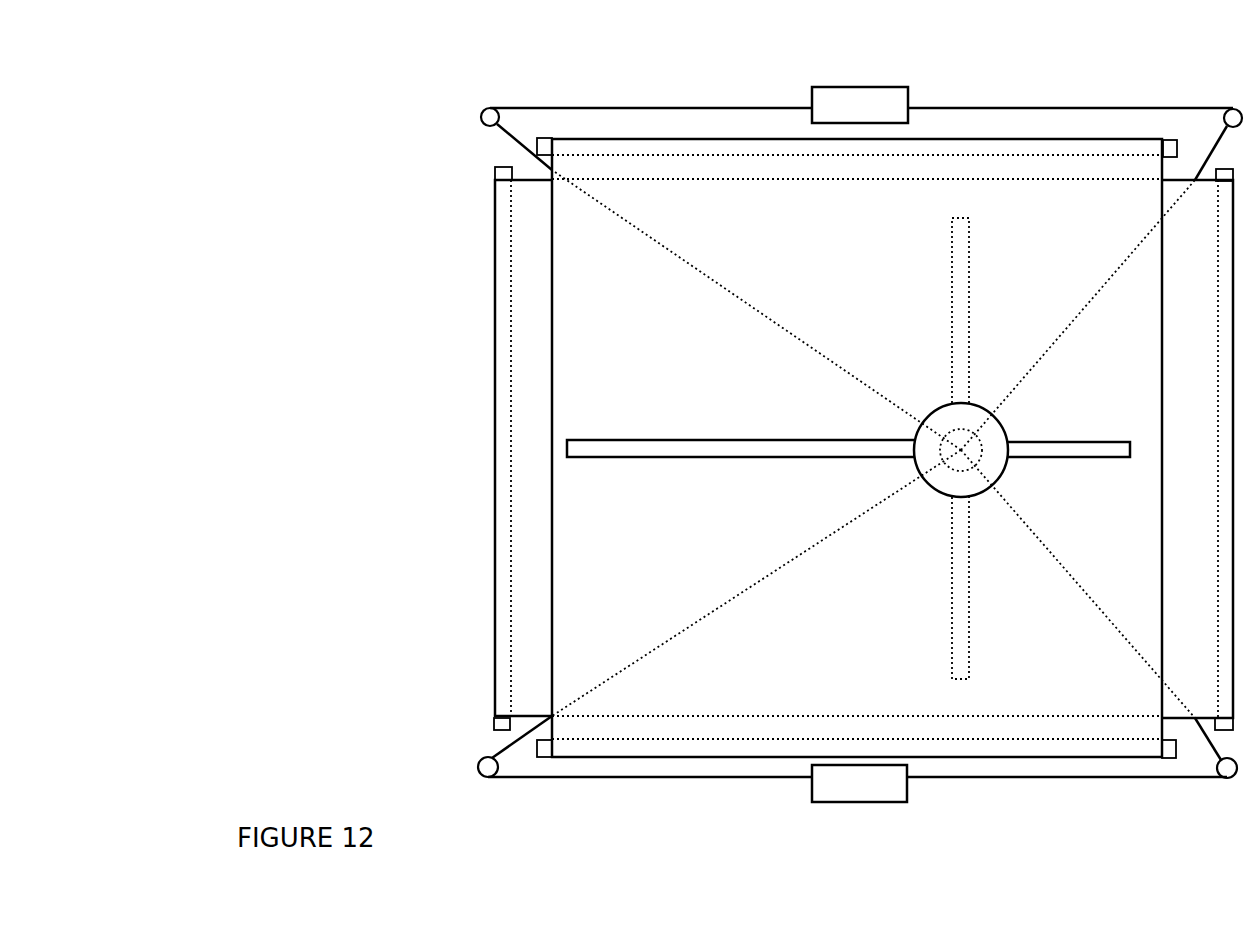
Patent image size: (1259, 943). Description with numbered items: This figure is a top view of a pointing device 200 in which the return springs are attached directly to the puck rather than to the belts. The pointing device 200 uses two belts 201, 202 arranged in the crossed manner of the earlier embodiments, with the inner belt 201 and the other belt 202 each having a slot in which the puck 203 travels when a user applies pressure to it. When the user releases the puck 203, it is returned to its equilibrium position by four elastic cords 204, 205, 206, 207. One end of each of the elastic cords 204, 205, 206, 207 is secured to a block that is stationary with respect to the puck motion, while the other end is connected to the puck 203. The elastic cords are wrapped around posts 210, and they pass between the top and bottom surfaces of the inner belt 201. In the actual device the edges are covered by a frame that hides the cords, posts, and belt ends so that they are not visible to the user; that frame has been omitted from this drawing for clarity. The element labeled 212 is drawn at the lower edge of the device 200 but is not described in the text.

The pointing device 200 is at (340, 94).
The inner belt 201 is at (500, 483).
The belt 202 is at (565, 232).
The puck 203 is at (940, 482).
The elastic cord 204 is at (710, 105).
The elastic cord 205 is at (1057, 105).
The elastic cord 206 is at (733, 780).
The elastic cord 207 is at (1093, 778).
The posts 210 is at (1231, 108).
The lower drive block 212 is at (856, 790).